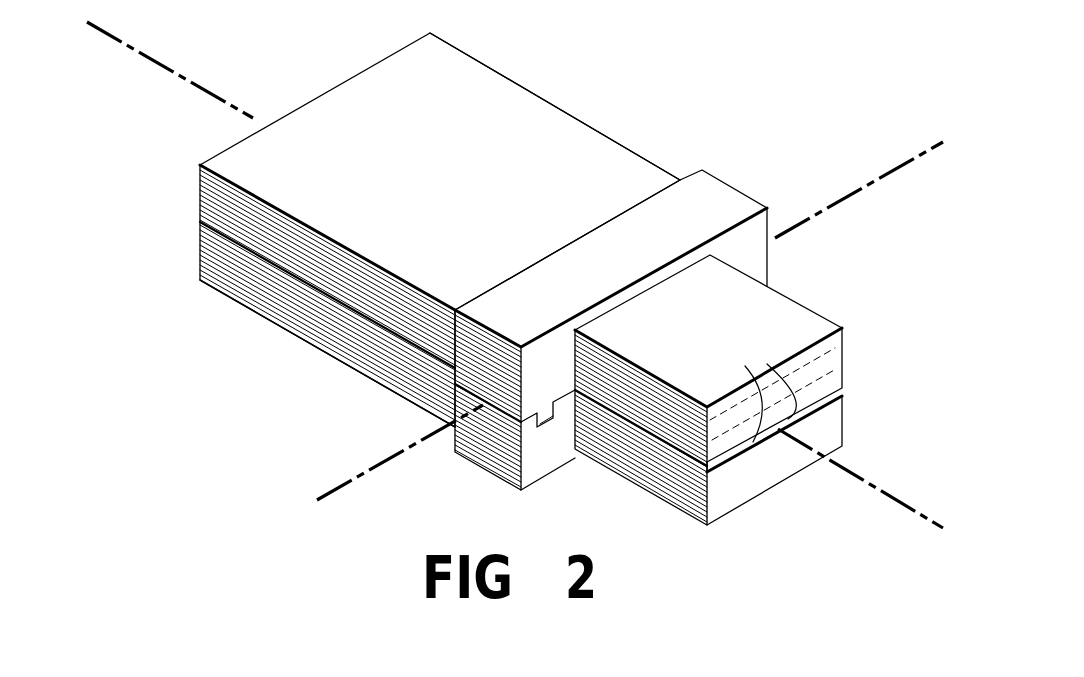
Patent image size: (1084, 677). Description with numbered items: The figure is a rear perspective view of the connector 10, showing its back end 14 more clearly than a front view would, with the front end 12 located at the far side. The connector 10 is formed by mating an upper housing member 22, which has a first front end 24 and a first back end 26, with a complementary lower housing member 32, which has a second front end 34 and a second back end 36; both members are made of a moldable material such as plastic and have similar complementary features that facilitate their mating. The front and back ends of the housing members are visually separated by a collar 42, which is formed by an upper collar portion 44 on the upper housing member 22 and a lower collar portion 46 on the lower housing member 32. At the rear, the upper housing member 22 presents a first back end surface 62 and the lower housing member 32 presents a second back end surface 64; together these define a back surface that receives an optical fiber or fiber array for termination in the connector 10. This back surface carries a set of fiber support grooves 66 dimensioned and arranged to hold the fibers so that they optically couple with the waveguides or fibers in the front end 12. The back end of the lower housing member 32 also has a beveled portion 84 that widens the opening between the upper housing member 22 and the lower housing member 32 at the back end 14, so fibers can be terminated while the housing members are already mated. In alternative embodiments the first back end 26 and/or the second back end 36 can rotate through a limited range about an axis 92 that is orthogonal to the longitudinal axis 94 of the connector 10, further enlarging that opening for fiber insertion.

The connector 10 is at (802, 83).
The front end 12 is at (434, 223).
The back end 14 is at (743, 404).
The upper housing member 22 is at (524, 84).
The first front end 24 is at (587, 135).
The first back end 26 is at (782, 302).
The lower housing member 32 is at (246, 312).
The second front end 34 is at (320, 346).
The second back end 36 is at (642, 477).
The collar 42 is at (615, 318).
The upper collar portion 44 is at (750, 200).
The lower collar portion 46 is at (485, 462).
The first back end surface 62 is at (833, 347).
The second back end surface 64 is at (833, 422).
The fiber support grooves 66 is at (767, 364).
The beveled portion 84 is at (728, 465).
The axis 92 is at (370, 458).
The longitudinal axis 94 is at (150, 50).